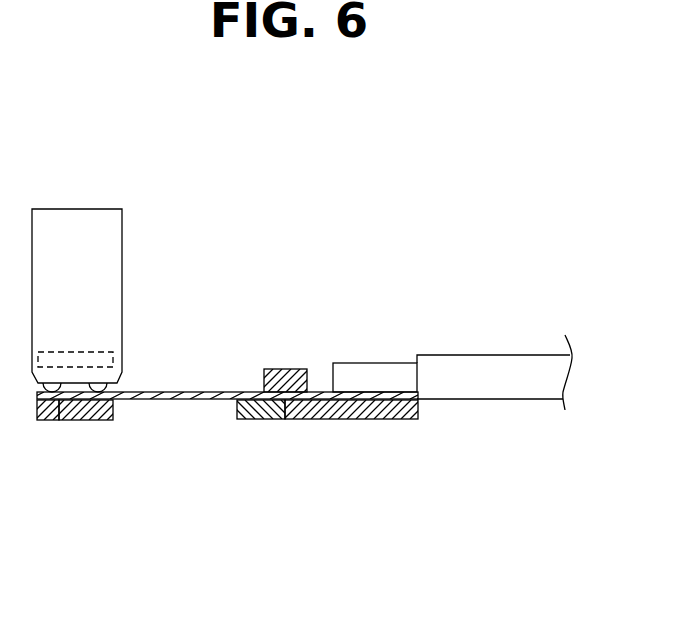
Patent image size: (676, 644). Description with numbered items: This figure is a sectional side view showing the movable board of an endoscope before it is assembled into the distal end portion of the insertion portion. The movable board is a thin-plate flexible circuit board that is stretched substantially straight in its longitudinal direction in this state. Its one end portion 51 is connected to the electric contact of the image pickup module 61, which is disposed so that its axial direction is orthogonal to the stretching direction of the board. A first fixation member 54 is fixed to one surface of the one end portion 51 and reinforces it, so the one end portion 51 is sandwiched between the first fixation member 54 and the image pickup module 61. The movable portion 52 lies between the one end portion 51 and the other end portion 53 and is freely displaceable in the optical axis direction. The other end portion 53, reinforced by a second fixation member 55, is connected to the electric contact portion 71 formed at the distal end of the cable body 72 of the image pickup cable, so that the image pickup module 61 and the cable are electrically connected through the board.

The image pickup module 61 is at (72, 209).
The movable portion 52 is at (183, 392).
The one end portion 51 is at (57, 420).
The first fixation member 54 is at (77, 420).
The other end portion 53 is at (288, 420).
The second fixation member 55 is at (330, 420).
The electric contact portion 71 is at (368, 363).
The cable body 72 is at (492, 355).